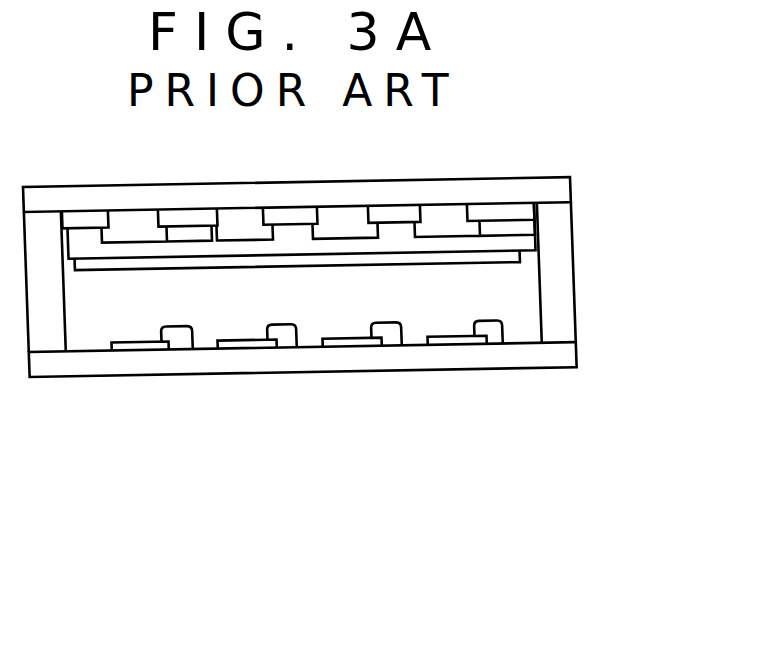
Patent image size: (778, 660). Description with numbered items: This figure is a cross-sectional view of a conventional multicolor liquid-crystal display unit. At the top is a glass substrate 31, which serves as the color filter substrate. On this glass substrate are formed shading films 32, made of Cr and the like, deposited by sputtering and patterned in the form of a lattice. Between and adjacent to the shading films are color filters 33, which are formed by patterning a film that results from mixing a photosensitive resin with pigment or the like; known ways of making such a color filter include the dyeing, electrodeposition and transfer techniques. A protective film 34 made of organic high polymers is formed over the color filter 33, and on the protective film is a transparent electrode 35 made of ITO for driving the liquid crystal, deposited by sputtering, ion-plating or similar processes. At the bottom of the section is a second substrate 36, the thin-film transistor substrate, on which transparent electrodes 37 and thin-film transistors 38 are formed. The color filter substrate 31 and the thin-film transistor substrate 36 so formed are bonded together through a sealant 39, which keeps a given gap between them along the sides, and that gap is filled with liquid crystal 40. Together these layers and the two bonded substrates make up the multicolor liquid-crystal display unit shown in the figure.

The glass substrate 31 is at (510, 192).
The shading films 32 is at (517, 213).
The color filters 33 is at (458, 229).
The protective film 34 is at (505, 238).
The transparent electrode 35 is at (507, 262).
The second substrate 36 is at (452, 353).
The transparent electrodes 37 is at (458, 340).
The thin-film transistors 38 is at (492, 332).
The sealant 39 is at (555, 308).
The liquid crystal 40 is at (520, 305).